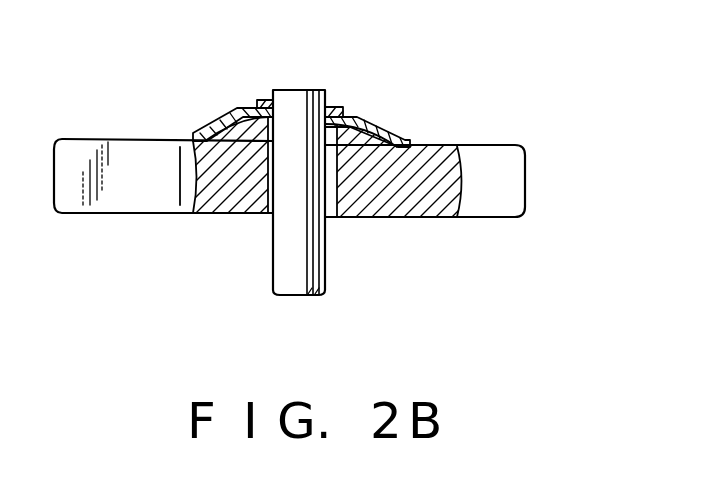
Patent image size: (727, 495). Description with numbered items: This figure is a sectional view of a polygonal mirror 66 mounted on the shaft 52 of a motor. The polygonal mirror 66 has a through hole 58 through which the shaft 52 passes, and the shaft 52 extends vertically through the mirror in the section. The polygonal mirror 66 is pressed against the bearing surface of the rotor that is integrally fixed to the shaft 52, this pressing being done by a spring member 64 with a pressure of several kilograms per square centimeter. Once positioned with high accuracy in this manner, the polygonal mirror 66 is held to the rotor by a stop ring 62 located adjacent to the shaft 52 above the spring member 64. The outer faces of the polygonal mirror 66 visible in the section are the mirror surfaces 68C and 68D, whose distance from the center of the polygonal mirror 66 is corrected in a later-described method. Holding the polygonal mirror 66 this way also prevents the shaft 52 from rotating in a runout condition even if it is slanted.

The shaft 52 is at (312, 90).
The through hole 58 is at (333, 217).
The stop ring 62 is at (337, 107).
The spring member 64 is at (370, 120).
The polygonal mirror 66 is at (443, 146).
The mirror surface 68C is at (125, 197).
The mirror surface 68D is at (505, 184).